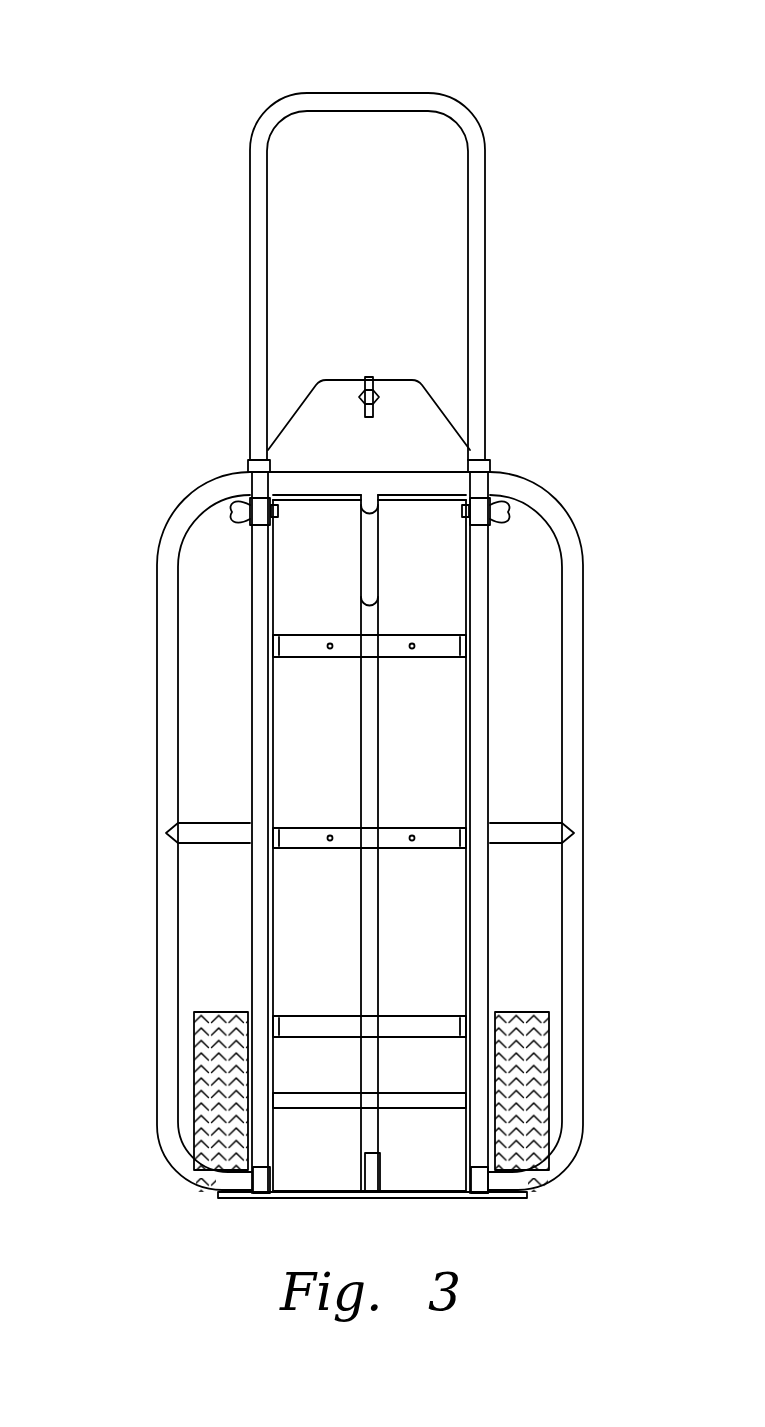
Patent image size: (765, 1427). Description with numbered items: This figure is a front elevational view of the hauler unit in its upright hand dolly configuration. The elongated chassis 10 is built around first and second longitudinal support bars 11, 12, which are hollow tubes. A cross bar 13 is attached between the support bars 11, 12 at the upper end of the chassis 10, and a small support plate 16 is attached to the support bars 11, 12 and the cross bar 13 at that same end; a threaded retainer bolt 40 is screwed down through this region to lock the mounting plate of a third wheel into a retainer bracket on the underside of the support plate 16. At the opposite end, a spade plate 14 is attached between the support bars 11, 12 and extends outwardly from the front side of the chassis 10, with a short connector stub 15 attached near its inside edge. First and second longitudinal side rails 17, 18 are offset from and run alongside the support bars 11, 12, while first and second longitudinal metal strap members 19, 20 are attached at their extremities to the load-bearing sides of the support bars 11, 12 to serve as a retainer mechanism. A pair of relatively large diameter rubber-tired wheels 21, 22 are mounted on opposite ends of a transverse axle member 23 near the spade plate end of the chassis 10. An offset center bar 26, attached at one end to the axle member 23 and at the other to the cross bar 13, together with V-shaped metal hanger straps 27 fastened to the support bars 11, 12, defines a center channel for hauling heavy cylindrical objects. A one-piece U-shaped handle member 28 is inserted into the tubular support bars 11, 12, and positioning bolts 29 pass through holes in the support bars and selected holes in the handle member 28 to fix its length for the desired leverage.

The elongated chassis 10 is at (150, 769).
The first longitudinal support bar 11 is at (273, 720).
The second longitudinal support bar 12 is at (472, 763).
The cross bar 13 is at (312, 472).
The spade plate 14 is at (322, 1198).
The connector stub 15 is at (382, 1172).
The support plate 16 is at (397, 380).
The first longitudinal side rail 17 is at (157, 668).
The second longitudinal side rail 18 is at (583, 653).
The first longitudinal metal strap member 19 is at (263, 905).
The second longitudinal metal strap member 20 is at (478, 936).
The rubber-tired wheel 21 is at (222, 1012).
The rubber-tired wheel 22 is at (512, 1012).
The transverse axle member 23 is at (298, 1093).
The center bar 26 is at (378, 716).
The V-shaped metal hanger straps 27 is at (308, 635).
The handle member 28 is at (372, 93).
The positioning bolts 29 is at (278, 514).
The retainer bolt 40 is at (366, 380).